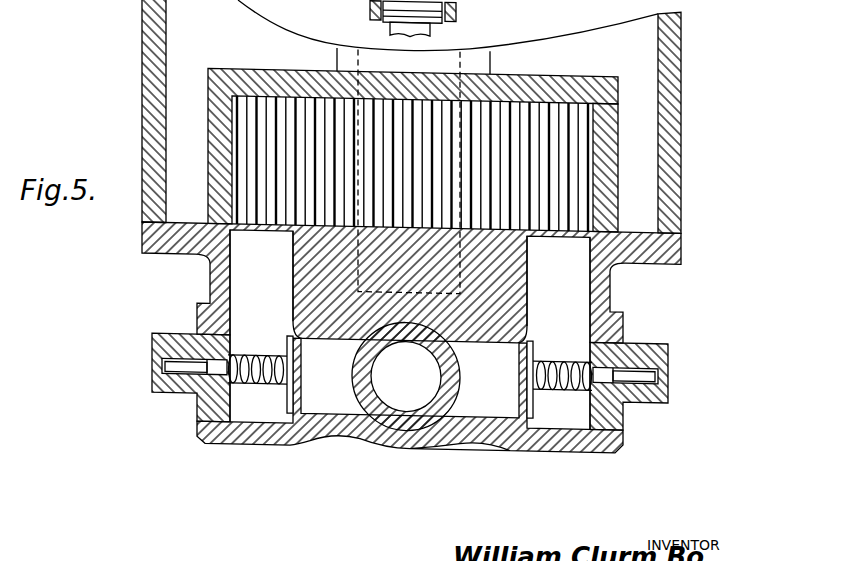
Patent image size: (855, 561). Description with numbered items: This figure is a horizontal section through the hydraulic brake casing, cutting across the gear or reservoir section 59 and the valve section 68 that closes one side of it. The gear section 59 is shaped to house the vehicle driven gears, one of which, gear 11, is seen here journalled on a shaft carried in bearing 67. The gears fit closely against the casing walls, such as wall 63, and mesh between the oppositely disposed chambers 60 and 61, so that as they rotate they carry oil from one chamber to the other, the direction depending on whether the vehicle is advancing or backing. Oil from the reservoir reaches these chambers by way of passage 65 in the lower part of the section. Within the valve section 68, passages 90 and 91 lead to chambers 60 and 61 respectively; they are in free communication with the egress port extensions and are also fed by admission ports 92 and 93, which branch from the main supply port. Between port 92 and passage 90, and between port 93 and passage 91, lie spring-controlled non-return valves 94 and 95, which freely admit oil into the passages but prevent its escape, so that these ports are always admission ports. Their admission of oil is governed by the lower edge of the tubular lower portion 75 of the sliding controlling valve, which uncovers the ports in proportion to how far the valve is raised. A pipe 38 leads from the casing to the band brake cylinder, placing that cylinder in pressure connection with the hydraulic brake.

The vehicle driven gear 11 is at (297, 152).
The pipe 38 is at (348, 526).
The gear or reservoir section 59 is at (305, 65).
The chamber 60 is at (240, 97).
The chamber 61 is at (585, 103).
The casing wall 63 is at (612, 110).
The passage 65 is at (636, 30).
The bearing 67 is at (478, 50).
The valve section 68 is at (142, 241).
The tubular lower portion of controlling valve 75 is at (392, 415).
The passage 90 is at (247, 318).
The passage 91 is at (553, 307).
The admission port 92 is at (337, 388).
The admission port 93 is at (477, 391).
The non-return valve 94 is at (291, 359).
The non-return valve 95 is at (527, 347).